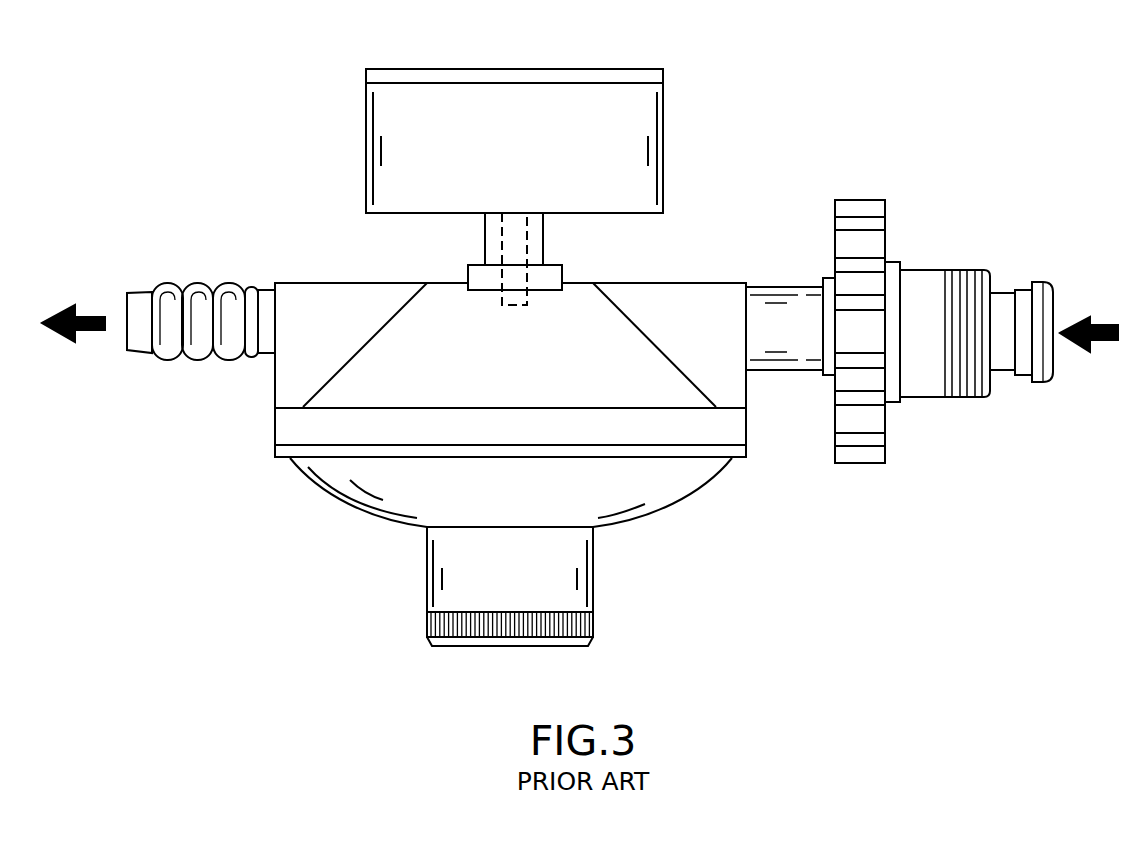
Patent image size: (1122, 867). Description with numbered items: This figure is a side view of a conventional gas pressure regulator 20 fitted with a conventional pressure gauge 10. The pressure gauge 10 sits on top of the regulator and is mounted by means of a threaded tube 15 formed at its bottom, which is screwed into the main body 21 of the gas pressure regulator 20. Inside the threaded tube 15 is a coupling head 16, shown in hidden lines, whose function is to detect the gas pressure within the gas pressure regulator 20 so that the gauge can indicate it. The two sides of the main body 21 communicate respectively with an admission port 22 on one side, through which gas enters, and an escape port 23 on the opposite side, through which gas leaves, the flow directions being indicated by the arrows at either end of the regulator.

The pressure gauge 10 is at (350, 137).
The threaded tube 15 is at (485, 245).
The coupling head 16 is at (518, 243).
The gas pressure regulator 20 is at (226, 429).
The main body 21 is at (400, 470).
The admission port 22 is at (920, 286).
The escape port 23 is at (166, 290).